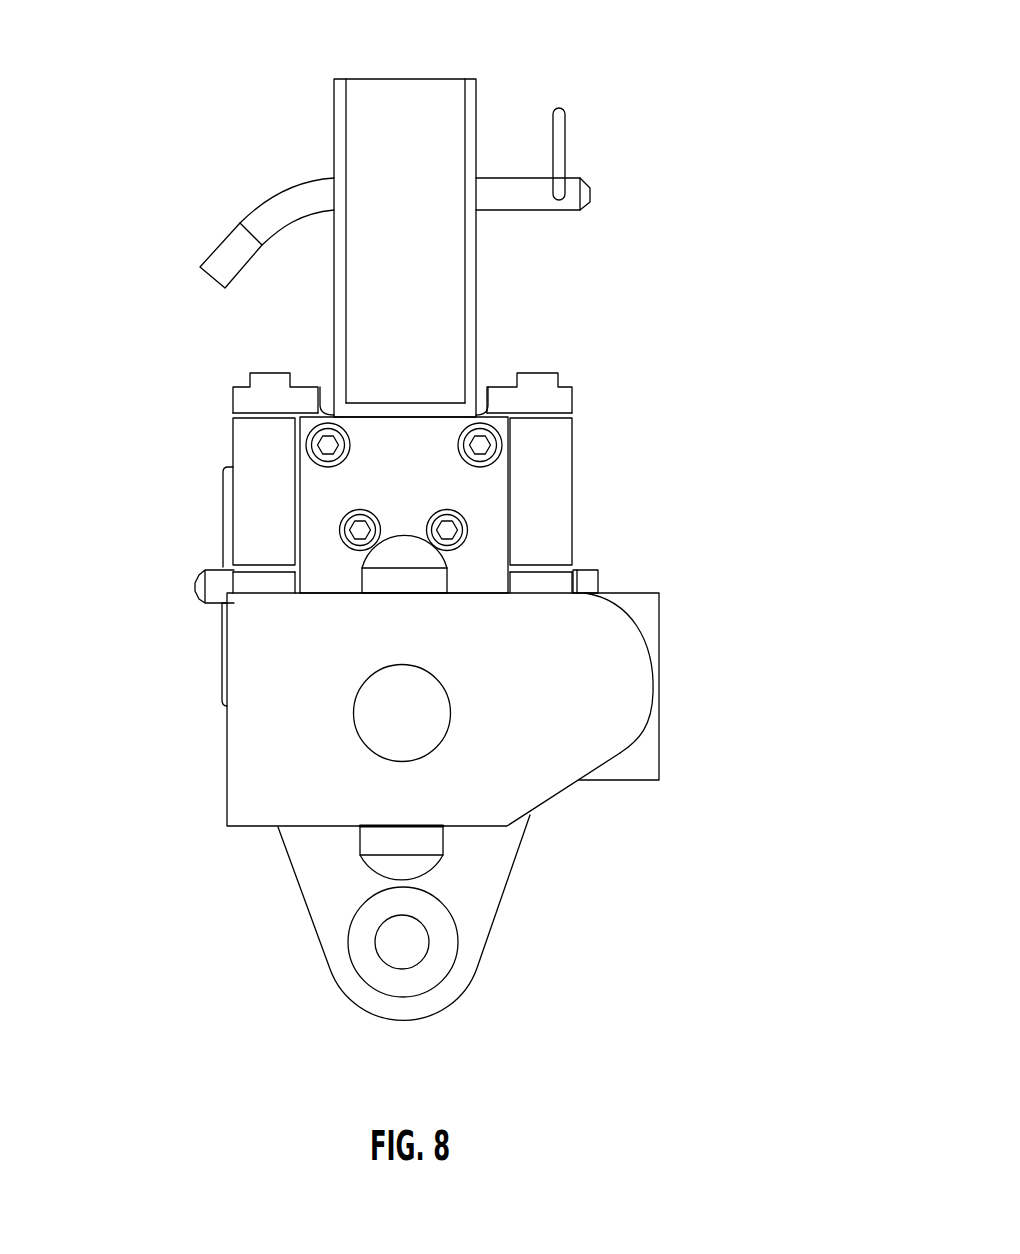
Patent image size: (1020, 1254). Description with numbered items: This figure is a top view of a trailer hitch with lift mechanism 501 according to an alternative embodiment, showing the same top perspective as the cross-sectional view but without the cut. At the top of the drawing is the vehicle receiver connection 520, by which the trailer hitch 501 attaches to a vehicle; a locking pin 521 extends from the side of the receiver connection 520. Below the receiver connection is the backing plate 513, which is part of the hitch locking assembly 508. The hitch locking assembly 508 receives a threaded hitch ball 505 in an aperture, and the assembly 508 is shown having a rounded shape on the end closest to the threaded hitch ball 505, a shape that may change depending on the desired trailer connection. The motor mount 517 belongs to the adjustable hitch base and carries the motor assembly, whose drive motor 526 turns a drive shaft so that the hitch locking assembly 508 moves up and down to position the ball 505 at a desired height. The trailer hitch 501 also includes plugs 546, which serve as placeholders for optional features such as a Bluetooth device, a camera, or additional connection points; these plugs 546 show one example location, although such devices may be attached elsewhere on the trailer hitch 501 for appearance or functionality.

The trailer hitch with lift mechanism 501 is at (735, 377).
The vehicle receiver connection 520 is at (445, 79).
The locking pin 521 is at (590, 188).
The backing plate 513 is at (233, 405).
The motor mount 517 is at (660, 622).
The drive motor 526 is at (633, 745).
The plugs 546 is at (352, 704).
The hitch locking assembly 508 is at (510, 895).
The threaded hitch ball 505 is at (377, 953).